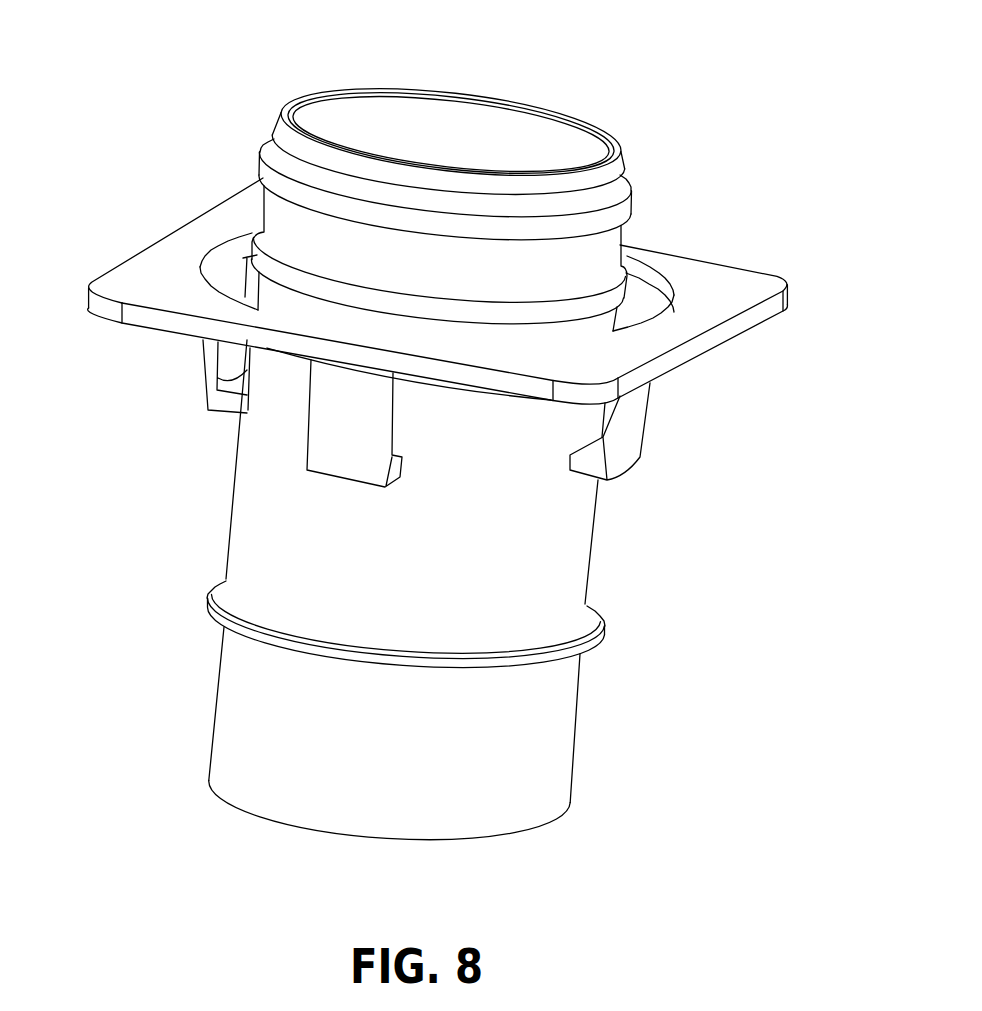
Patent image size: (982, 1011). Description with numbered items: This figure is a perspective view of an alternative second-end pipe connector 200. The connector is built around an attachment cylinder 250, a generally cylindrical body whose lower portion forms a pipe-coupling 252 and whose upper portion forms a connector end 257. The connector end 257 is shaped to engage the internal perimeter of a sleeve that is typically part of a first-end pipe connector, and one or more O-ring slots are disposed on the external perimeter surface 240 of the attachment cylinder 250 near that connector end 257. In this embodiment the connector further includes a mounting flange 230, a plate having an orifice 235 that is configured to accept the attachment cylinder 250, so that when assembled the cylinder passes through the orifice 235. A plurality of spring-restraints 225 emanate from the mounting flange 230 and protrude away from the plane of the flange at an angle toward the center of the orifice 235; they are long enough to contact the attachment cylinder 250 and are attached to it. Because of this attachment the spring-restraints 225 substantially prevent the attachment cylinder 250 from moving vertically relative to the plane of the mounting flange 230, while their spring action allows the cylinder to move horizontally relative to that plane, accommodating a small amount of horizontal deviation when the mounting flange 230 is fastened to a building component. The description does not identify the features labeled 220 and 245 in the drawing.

The second-end pipe connector 200 is at (597, 91).
The cylindrical body 220 is at (592, 543).
The spring-restraints 225 is at (646, 417).
The mounting flange 230 is at (710, 257).
The orifice 235 is at (650, 276).
The external perimeter surface 240 is at (264, 190).
The upper rib 245 is at (259, 163).
The attachment cylinder 250 is at (281, 112).
The pipe-coupling 252 is at (235, 803).
The connector end 257 is at (350, 90).